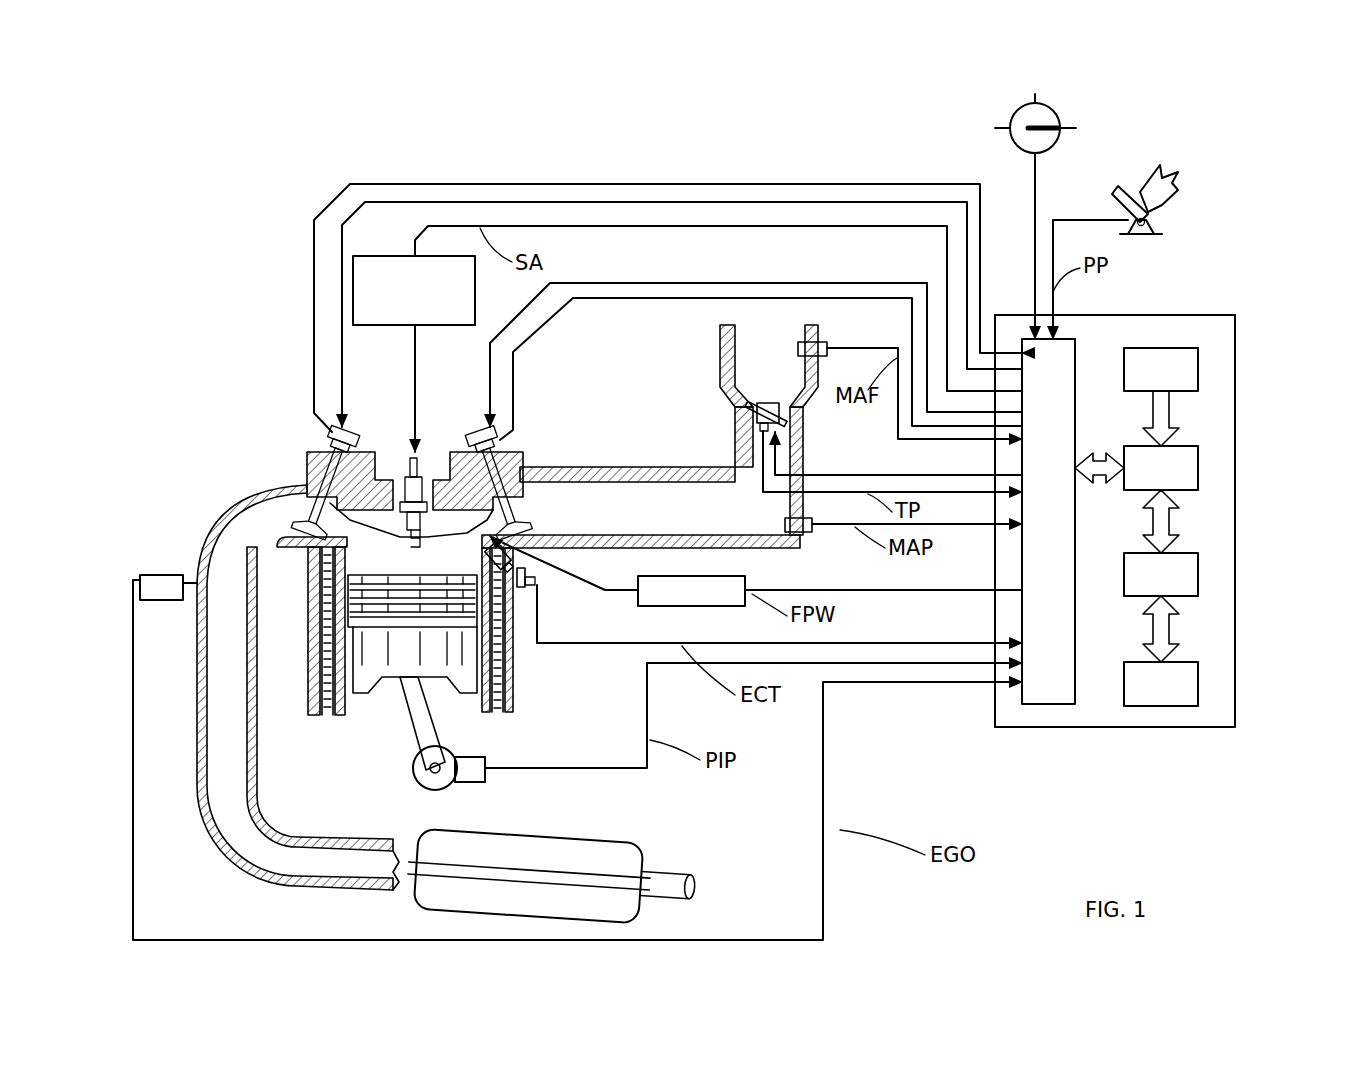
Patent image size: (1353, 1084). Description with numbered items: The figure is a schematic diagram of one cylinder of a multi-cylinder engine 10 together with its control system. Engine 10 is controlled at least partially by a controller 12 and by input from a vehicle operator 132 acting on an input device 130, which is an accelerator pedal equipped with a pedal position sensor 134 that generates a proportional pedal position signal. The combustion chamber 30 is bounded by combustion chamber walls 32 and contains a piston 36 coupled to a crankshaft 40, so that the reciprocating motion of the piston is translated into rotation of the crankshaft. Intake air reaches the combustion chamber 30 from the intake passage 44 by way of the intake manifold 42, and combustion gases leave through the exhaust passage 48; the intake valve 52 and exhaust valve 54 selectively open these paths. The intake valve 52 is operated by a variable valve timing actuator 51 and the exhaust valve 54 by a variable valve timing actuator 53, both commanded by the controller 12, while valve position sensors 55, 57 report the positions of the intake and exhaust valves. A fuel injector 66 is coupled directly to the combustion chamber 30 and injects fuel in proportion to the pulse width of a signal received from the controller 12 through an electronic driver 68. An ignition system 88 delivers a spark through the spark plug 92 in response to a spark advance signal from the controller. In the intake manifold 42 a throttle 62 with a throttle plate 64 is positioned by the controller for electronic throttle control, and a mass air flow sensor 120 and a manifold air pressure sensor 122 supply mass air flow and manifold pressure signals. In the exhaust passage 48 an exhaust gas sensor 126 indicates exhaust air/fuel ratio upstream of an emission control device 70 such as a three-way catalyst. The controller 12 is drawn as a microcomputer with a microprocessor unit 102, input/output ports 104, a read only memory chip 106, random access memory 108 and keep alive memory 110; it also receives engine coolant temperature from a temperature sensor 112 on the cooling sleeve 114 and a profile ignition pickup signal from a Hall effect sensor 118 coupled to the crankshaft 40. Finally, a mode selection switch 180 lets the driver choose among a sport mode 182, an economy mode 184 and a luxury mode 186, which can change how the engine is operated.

The engine 10 is at (240, 403).
The controller 12 is at (1235, 315).
The combustion chamber 30 is at (410, 565).
The combustion chamber walls 32 is at (352, 707).
The piston 36 is at (396, 665).
The crankshaft 40 is at (428, 786).
The intake manifold 42 is at (769, 366).
The intake passage 44 is at (642, 477).
The exhaust passage 48 is at (298, 687).
The variable valve timing actuator 51 is at (486, 428).
The intake valve 52 is at (455, 522).
The variable valve timing actuator 53 is at (348, 428).
The exhaust valve 54 is at (370, 535).
The valve position sensor 55 is at (495, 438).
The valve position sensor 57 is at (335, 437).
The throttle 62 is at (782, 408).
The throttle plate 64 is at (750, 408).
The fuel injector 66 is at (508, 566).
The electronic driver 68 is at (668, 606).
The emission control device 70 is at (598, 840).
The ignition system 88 is at (368, 256).
The spark plug 92 is at (416, 465).
The microprocessor unit 102 is at (1198, 468).
The input/output ports 104 is at (1075, 345).
The read only memory chip 106 is at (1198, 365).
The random access memory 108 is at (1198, 575).
The keep alive memory 110 is at (1198, 685).
The temperature sensor 112 is at (535, 585).
The cooling sleeve 114 is at (497, 690).
The Hall effect sensor 118 is at (470, 783).
The mass air flow sensor 120 is at (820, 342).
The manifold air pressure sensor 122 is at (808, 532).
The exhaust gas sensor 126 is at (140, 584).
The input device 130 is at (1122, 192).
The vehicle operator 132 is at (1178, 185).
The pedal position sensor 134 is at (1160, 228).
The mode selection switch 180 is at (1047, 106).
The sport mode 182 is at (981, 128).
The economy mode 184 is at (1035, 86).
The luxury mode 186 is at (1090, 128).